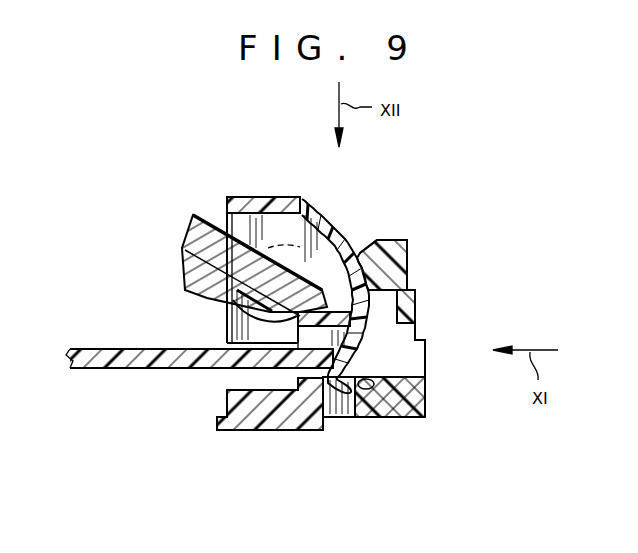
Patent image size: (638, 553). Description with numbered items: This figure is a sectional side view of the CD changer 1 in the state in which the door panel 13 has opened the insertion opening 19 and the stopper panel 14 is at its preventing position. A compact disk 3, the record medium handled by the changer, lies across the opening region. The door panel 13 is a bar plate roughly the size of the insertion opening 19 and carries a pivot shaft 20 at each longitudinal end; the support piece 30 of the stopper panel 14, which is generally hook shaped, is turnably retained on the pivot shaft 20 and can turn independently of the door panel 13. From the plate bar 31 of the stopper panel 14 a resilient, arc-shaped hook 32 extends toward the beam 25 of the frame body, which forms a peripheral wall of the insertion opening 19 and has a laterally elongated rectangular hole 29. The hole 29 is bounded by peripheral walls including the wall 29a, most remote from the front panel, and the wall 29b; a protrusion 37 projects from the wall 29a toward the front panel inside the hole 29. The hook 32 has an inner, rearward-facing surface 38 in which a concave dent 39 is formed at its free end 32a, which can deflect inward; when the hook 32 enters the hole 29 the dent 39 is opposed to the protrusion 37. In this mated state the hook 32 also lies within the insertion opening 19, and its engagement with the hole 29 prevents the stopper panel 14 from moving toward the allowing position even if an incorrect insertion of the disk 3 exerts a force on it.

The connector 1 is at (487, 205).
The compact disk 3 is at (126, 360).
The door panel 13 is at (208, 214).
The stopper panel 14 is at (401, 233).
The insertion opening 19 is at (398, 357).
The pivot shaft 20 is at (298, 194).
The beam 25 is at (273, 421).
The hole 29 is at (363, 418).
The peripheral wall 29a is at (423, 412).
The peripheral wall 29b is at (312, 428).
The support piece 30 is at (328, 274).
The plate bar 31 is at (408, 250).
The hook 32 is at (421, 339).
The free end 32a is at (341, 394).
The protrusion 37 is at (404, 417).
The surface 38 is at (418, 327).
The dent 39 is at (420, 401).